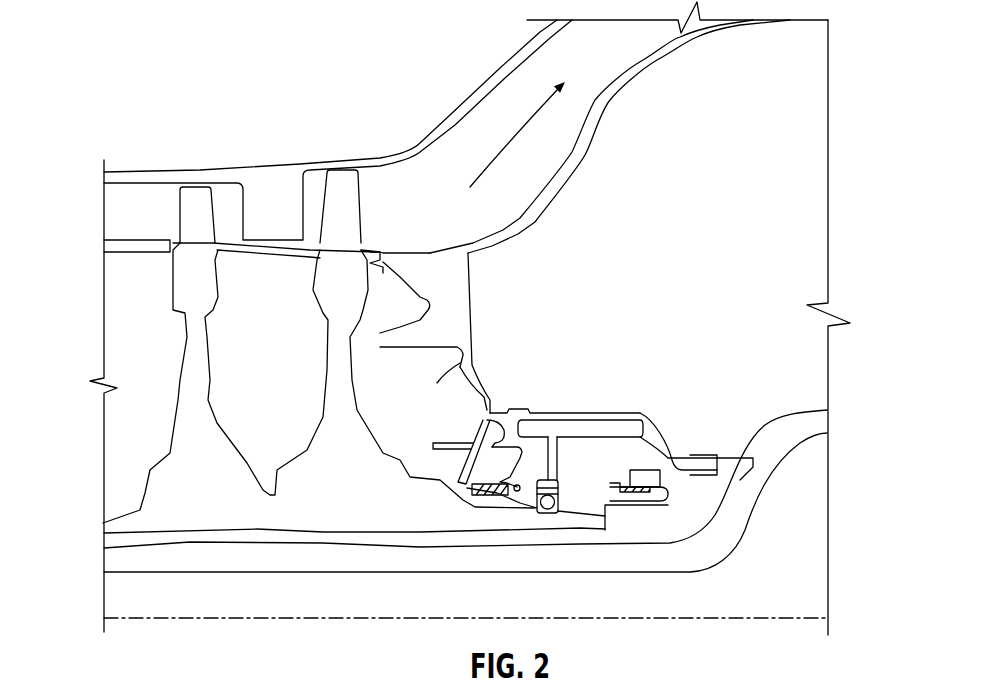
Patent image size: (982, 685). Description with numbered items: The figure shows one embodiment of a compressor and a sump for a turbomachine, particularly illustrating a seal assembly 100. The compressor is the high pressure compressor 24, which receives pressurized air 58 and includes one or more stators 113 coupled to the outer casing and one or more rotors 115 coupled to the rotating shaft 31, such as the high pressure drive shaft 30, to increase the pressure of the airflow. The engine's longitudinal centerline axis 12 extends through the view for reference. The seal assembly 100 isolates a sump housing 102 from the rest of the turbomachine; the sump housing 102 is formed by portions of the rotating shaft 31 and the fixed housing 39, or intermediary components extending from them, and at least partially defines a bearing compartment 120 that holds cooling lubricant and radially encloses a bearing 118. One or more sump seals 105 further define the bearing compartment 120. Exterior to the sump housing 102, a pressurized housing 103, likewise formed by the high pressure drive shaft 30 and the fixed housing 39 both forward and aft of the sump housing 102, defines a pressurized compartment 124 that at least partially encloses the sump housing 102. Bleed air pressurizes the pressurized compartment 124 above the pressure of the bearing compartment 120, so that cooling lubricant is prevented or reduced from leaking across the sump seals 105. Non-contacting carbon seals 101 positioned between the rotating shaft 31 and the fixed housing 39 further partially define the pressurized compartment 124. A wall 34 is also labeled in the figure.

The centerline axis 12 is at (750, 620).
The high pressure compressor 24 is at (262, 114).
The high pressure drive shaft 30 is at (465, 512).
The rotating shaft 31 is at (577, 523).
The aft core cowl wall 34 is at (740, 515).
The fixed housing 39 is at (516, 227).
The pressurized air 58 is at (533, 127).
The seal assembly 100 is at (588, 372).
The non-contacting carbon seal 101 is at (388, 231).
The sump housing 102 is at (570, 393).
The pressurized housing 103 is at (480, 323).
The sump seal 105 is at (470, 469).
The stator 113 is at (265, 187).
The rotor 115 is at (192, 213).
The bearing 118 is at (656, 432).
The bearing compartment 120 is at (575, 455).
The pressurized compartment 124 is at (440, 382).